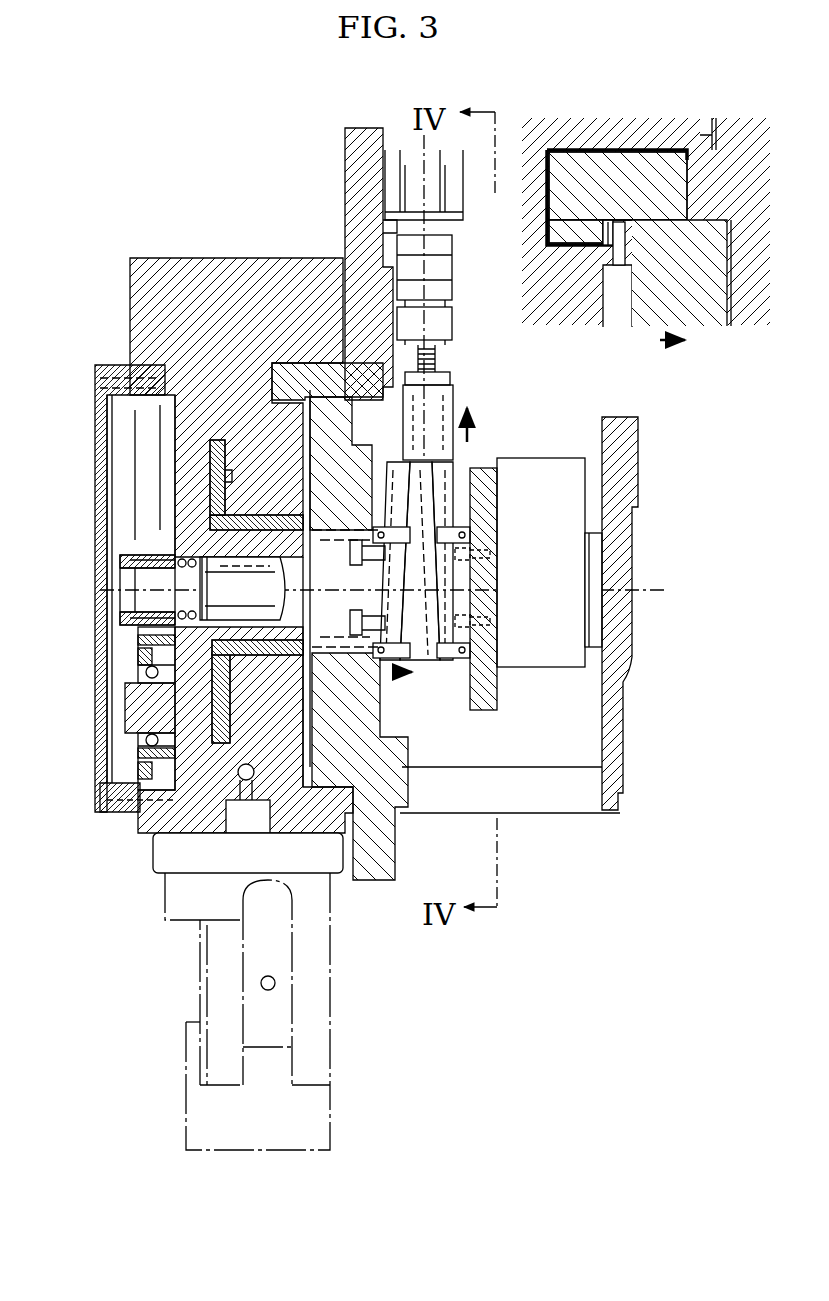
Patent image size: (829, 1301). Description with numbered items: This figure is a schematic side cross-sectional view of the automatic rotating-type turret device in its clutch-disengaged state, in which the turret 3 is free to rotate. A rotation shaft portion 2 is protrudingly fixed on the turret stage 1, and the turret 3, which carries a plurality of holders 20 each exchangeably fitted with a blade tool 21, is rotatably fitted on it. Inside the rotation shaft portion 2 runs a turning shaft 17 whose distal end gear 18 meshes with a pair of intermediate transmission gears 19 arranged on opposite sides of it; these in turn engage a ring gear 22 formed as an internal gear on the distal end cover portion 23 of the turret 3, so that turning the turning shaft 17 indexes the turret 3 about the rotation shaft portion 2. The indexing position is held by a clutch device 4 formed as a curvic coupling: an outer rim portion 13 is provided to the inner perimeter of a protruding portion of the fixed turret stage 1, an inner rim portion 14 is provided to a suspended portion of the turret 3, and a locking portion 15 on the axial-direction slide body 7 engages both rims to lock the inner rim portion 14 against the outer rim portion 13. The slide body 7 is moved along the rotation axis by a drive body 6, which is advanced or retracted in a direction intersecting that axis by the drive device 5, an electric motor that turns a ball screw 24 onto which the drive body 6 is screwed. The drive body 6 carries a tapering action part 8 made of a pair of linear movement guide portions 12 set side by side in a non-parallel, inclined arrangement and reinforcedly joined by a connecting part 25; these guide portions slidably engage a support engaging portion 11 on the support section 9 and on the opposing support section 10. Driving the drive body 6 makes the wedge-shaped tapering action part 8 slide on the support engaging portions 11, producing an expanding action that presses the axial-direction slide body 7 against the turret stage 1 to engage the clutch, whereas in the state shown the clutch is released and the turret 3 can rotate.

The turret stage 1 is at (340, 178).
The rotation shaft portion 2 is at (288, 516).
The turret 3 is at (148, 242).
The clutch device 4 is at (292, 345).
The drive device 5 is at (458, 195).
The drive body 6 is at (452, 385).
The axial-direction slide body 7 is at (360, 712).
The tapering action part 8 is at (521, 539).
The support section 9 is at (480, 538).
The opposing support section 10 is at (400, 632).
The support engaging portion 11 is at (432, 625).
The linear movement guide portion 12 is at (405, 470).
The outer rim portion 13 is at (600, 232).
The inner rim portion 14 is at (610, 255).
The locking portion 15 is at (620, 285).
The turning shaft 17 is at (215, 567).
The distal end gear 18 is at (165, 560).
The intermediate transmission gear 19 is at (138, 655).
The holder 20 is at (165, 913).
The blade tool 21 is at (186, 1086).
The ring gear 22 is at (138, 765).
The distal end cover portion 23 is at (100, 425).
The ball screw 24 is at (440, 362).
The connecting part 25 is at (549, 562).